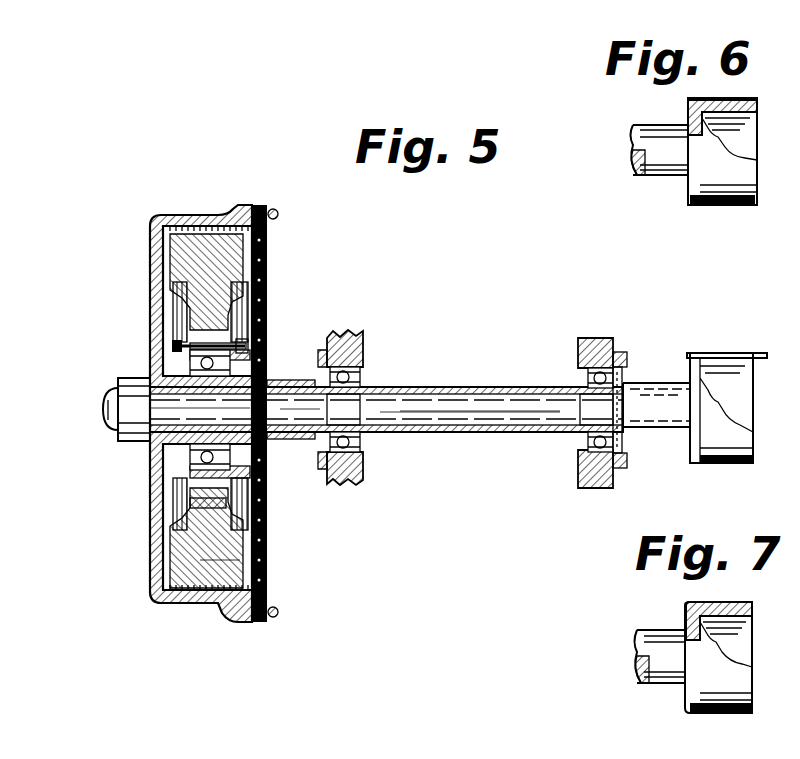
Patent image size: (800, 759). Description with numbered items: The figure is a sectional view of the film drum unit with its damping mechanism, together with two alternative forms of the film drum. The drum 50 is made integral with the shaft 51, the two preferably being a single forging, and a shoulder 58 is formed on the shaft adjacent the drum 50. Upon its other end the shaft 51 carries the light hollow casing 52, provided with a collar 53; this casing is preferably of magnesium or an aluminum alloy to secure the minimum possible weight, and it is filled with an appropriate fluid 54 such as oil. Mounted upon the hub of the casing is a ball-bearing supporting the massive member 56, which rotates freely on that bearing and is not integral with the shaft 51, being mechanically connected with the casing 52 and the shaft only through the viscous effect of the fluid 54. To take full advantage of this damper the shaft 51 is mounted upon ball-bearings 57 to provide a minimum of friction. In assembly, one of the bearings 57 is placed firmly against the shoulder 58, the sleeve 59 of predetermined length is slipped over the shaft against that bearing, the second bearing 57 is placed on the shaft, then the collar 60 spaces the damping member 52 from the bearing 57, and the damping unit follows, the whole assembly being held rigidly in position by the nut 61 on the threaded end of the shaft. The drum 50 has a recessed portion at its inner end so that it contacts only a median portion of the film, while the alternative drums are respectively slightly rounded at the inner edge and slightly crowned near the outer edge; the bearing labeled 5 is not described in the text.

The bearing 5 is at (268, 361).
The drum 50 is at (712, 354).
The shaft 51 is at (415, 396).
The light hollow casing 52 is at (150, 300).
The collar 53 is at (266, 292).
The fluid 54 is at (262, 338).
The massive member 56 is at (267, 559).
The ball-bearings 57 is at (356, 387).
The shoulder 58 is at (622, 385).
The sleeve 59 is at (490, 433).
The collar 60 is at (294, 440).
The nut 61 is at (128, 441).